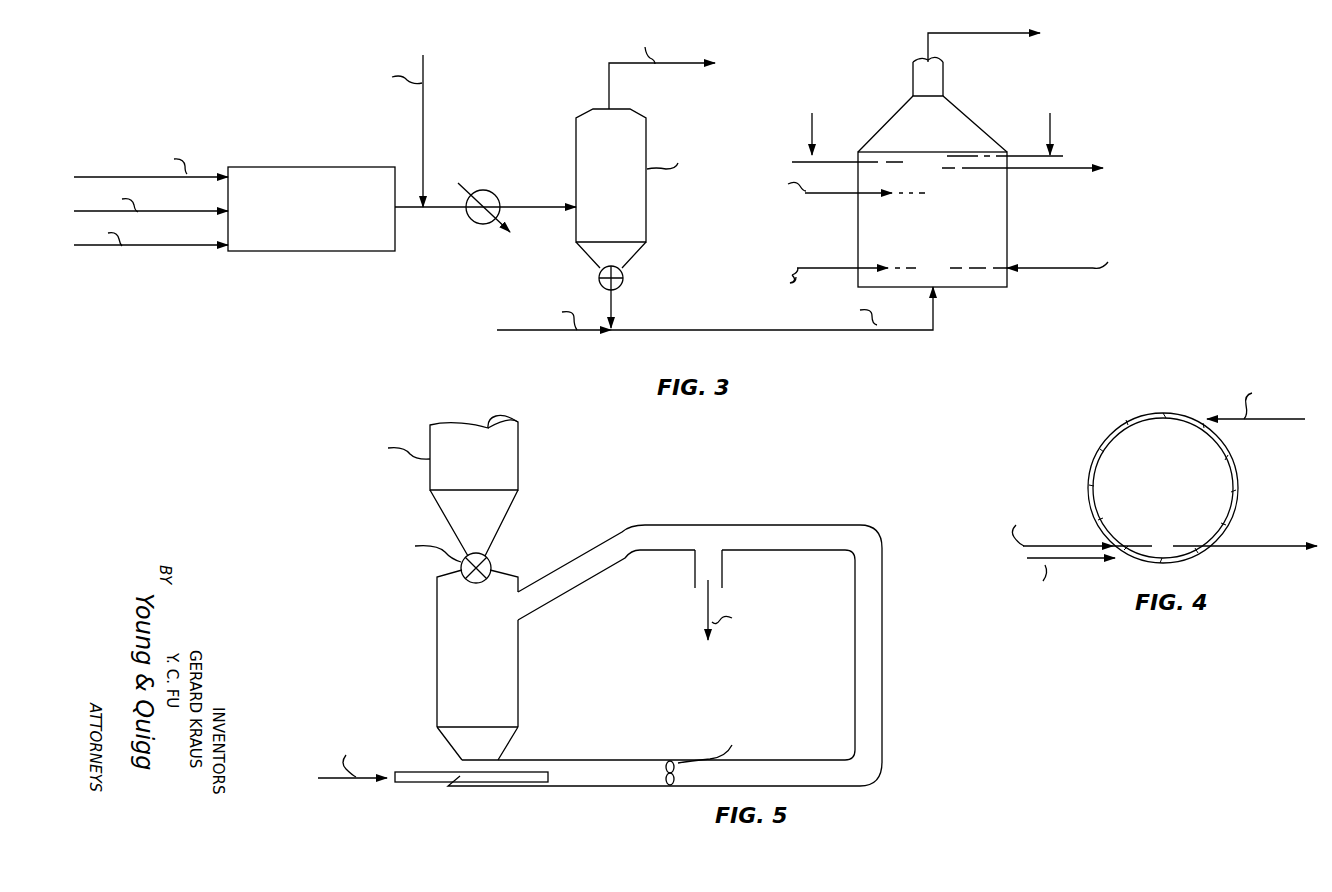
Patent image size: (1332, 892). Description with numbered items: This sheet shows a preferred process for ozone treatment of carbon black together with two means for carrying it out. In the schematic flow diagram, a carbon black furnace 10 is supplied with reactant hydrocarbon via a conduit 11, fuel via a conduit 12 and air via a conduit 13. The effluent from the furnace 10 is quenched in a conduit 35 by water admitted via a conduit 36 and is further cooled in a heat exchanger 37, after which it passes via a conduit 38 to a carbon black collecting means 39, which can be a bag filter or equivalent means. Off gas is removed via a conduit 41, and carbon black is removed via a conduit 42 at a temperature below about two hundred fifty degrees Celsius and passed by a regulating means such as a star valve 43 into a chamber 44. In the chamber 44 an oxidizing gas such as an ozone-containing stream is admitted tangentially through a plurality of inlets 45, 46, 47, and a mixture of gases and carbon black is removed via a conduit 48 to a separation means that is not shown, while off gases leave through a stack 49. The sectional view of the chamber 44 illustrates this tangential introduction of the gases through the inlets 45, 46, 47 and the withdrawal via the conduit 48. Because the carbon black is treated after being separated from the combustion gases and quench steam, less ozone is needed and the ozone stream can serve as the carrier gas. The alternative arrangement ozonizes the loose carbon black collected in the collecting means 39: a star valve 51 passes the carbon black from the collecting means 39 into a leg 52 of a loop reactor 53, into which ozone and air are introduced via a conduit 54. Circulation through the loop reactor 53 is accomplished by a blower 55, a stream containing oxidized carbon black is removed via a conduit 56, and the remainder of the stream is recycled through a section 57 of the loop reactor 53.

In FIG. 3, the carbon black furnace 10 is at (298, 253).
In FIG. 3, the conduit 11 is at (200, 178).
In FIG. 3, the conduit 12 is at (197, 213).
In FIG. 3, the conduit 13 is at (197, 251).
In FIG. 3, the conduit 35 is at (437, 209).
In FIG. 3, the conduit 36 is at (423, 98).
In FIG. 3, the heat exchanger 37 is at (498, 200).
In FIG. 3, the conduit 38 is at (549, 207).
In FIG. 3, the carbon black collecting means 39 is at (622, 177).
In FIG. 5, the carbon black collecting means 39 is at (486, 467).
In FIG. 3, the conduit 41 is at (608, 80).
In FIG. 3, the conduit 42 is at (814, 332).
In FIG. 3, the star valve 43 is at (622, 283).
In FIG. 3, the chamber 44 is at (942, 132).
In FIG. 4, the chamber 44 is at (1092, 454).
In FIG. 3, the inlet 45 is at (1052, 268).
In FIG. 4, the inlet 45 is at (1305, 419).
In FIG. 3, the inlet 46 is at (835, 196).
In FIG. 4, the inlet 46 is at (1068, 546).
In FIG. 3, the inlet 47 is at (817, 268).
In FIG. 4, the inlet 47 is at (1096, 560).
In FIG. 3, the conduit 48 is at (1035, 170).
In FIG. 4, the conduit 48 is at (1240, 543).
In FIG. 3, the stack 49 is at (910, 72).
In FIG. 5, the star valve 51 is at (490, 558).
In FIG. 5, the leg 52 is at (437, 629).
In FIG. 5, the loop reactor 53 is at (883, 656).
In FIG. 5, the conduit 54 is at (422, 772).
In FIG. 5, the blower 55 is at (672, 761).
In FIG. 5, the conduit 56 is at (722, 586).
In FIG. 5, the section 57 is at (597, 573).